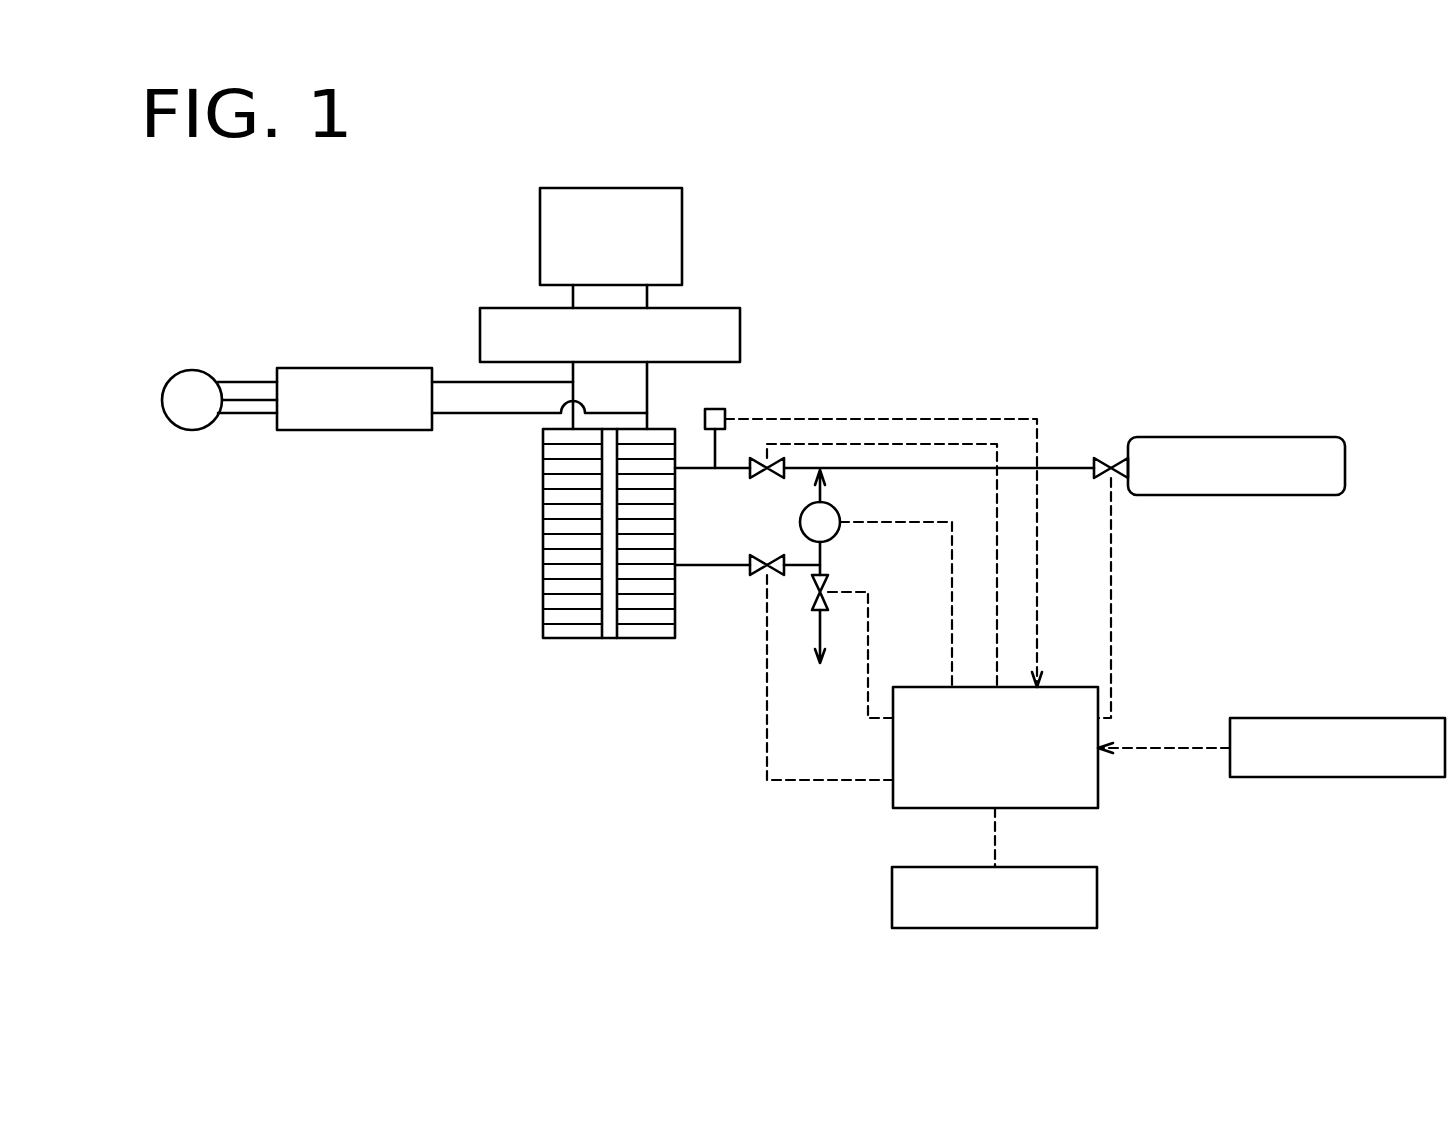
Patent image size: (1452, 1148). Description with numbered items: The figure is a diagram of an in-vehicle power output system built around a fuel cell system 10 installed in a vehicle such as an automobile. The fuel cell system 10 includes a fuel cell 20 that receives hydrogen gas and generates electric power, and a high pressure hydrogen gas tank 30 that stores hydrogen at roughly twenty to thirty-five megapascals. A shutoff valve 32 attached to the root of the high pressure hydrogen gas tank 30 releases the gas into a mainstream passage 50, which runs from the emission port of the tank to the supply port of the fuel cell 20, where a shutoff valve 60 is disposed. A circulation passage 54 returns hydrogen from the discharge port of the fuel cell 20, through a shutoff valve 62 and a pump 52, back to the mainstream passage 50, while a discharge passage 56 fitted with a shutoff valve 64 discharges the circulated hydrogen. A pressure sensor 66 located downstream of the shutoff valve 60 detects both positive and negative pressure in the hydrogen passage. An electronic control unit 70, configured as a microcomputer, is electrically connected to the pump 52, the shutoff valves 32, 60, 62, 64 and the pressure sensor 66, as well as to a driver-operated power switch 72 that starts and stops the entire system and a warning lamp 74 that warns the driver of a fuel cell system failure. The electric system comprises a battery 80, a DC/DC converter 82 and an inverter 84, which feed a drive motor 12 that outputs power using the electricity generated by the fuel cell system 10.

The fuel cell system 10 is at (942, 328).
The drive motor 12 is at (202, 368).
The fuel cell 20 is at (557, 638).
The high pressure hydrogen gas tank 30 is at (1325, 437).
The shutoff valve 32 is at (1110, 457).
The mainstream passage 50 is at (1063, 462).
The pump 52 is at (839, 511).
The circulation passage 54 is at (717, 568).
The discharge passage 56 is at (817, 627).
The shutoff valve 60 is at (750, 471).
The shutoff valve 62 is at (772, 557).
The shutoff valve 64 is at (829, 585).
The pressure sensor 66 is at (713, 409).
The electronic control unit 70 is at (892, 797).
The power switch 72 is at (1410, 718).
The warning lamp 74 is at (1097, 900).
The battery 80 is at (655, 188).
The DC/DC converter 82 is at (703, 308).
The inverter 84 is at (393, 368).